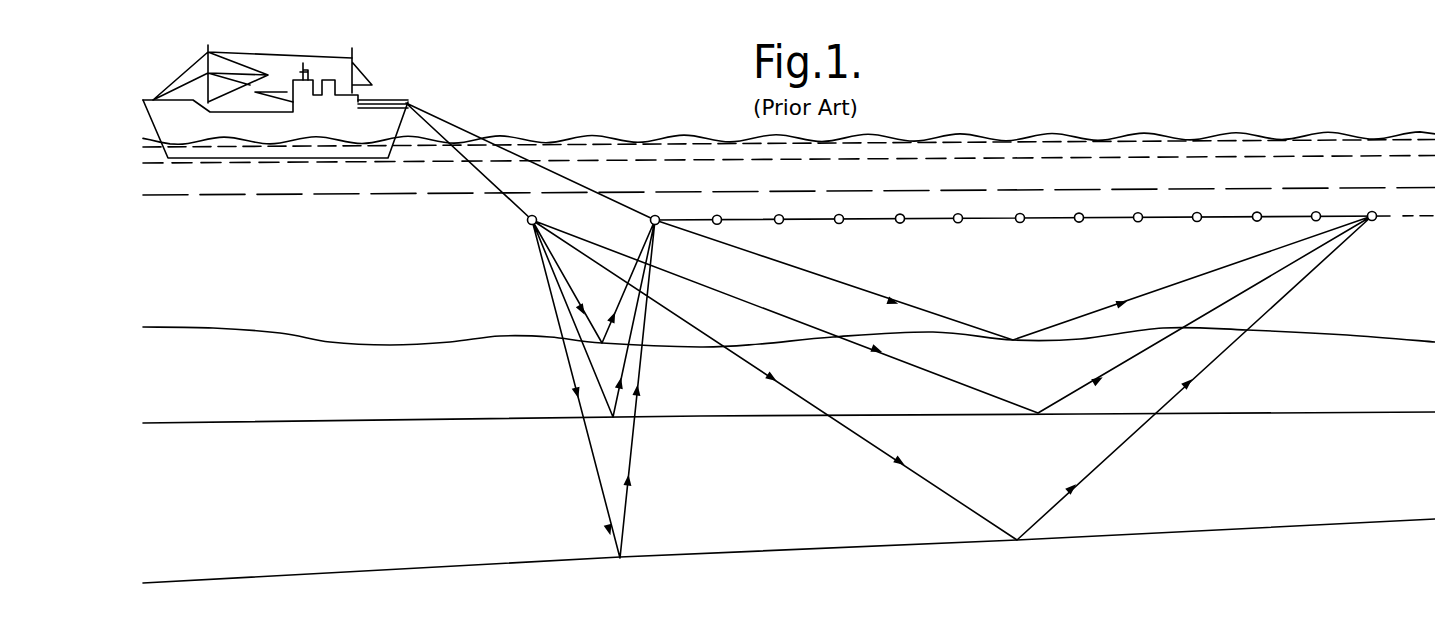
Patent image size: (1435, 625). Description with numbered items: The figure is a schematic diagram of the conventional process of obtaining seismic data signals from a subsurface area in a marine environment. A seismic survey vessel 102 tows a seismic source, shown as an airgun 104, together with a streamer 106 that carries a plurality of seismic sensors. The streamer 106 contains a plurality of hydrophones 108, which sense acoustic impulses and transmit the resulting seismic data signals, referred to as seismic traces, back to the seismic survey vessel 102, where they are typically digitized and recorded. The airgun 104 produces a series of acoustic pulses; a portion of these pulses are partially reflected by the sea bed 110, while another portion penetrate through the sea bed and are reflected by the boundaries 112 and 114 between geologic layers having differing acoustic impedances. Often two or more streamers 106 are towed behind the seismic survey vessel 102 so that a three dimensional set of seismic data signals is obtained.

The seismic survey vessel 102 is at (375, 117).
The airgun 104 is at (527, 223).
The streamer 106 is at (767, 221).
The hydrophones 108 is at (1023, 222).
The sea bed 110 is at (278, 333).
The boundary between geologic layers 112 is at (283, 422).
The boundary between geologic layers 114 is at (284, 575).